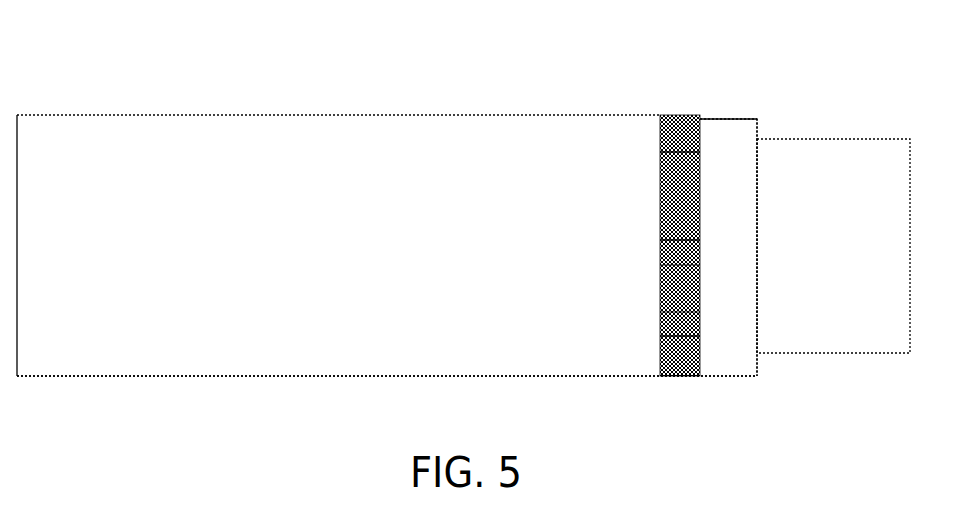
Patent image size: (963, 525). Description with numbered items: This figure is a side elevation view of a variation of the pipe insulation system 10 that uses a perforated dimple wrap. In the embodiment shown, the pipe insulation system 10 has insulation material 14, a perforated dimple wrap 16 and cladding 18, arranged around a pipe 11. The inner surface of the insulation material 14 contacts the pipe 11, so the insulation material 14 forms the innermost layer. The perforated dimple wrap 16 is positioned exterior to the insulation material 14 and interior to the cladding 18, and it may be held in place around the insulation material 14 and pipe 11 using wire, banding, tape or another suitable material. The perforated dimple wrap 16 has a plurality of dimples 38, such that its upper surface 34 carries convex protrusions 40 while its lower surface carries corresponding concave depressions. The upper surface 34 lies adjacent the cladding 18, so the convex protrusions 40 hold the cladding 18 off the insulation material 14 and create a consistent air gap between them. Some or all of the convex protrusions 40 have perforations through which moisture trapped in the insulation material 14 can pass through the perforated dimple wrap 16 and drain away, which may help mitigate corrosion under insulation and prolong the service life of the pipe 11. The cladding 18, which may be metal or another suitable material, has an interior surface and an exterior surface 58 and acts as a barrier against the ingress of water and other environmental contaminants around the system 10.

The pipe insulation system 10 is at (180, 84).
The cladding 18 is at (533, 162).
The exterior surface 58 is at (264, 334).
The dimples 38 is at (640, 200).
The upper surface 34 is at (728, 69).
The convex protrusions 40 is at (677, 265).
The perforated dimple wrap 16 is at (677, 312).
The insulation material 14 is at (732, 335).
The pipe 11 is at (869, 322).